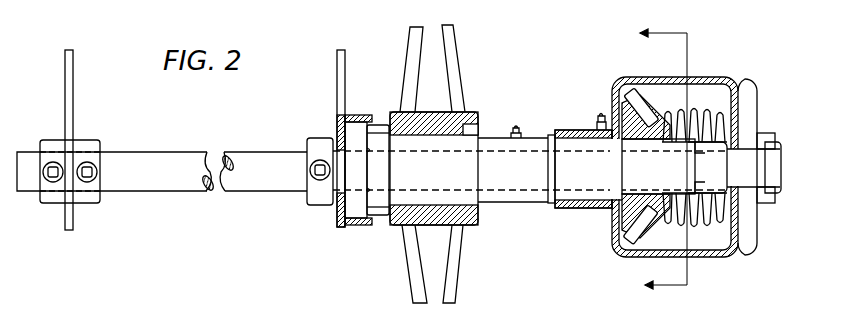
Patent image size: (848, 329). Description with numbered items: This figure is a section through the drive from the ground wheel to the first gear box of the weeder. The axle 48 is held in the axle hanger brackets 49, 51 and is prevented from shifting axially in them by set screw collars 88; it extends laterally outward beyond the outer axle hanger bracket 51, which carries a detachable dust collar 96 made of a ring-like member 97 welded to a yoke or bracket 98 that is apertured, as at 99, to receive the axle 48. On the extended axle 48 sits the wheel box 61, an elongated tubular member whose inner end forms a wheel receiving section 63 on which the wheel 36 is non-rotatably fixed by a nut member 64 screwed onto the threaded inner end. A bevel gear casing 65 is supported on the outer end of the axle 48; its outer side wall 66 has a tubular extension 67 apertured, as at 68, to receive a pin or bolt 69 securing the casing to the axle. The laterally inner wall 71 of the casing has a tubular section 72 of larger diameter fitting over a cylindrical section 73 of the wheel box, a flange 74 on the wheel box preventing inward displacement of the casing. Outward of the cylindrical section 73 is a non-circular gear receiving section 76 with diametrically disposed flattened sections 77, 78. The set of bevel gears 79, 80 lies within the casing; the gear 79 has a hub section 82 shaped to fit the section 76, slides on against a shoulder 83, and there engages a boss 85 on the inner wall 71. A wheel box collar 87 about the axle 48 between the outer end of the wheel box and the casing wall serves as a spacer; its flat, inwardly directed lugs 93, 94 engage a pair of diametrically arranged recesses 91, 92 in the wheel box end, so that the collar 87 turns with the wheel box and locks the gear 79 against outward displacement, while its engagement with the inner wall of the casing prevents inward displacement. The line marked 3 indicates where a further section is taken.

The section line 3- 3 is at (653, 158).
The left hand wheel 36 is at (459, 39).
The axle 48 is at (223, 190).
The axle hanger bracket 49 is at (70, 86).
The outer axle hanger bracket 51 is at (343, 78).
The wheel box 61 is at (530, 203).
The wheel receiving section 63 is at (462, 198).
The nut member 64 is at (383, 209).
The bevel gear casing 65 is at (705, 78).
The outer side wall 66 is at (731, 236).
The tubular extension 67 is at (773, 203).
The aperture 68 is at (772, 142).
The pin or bolt 69 is at (762, 133).
The laterally inner wall 71 is at (609, 108).
The tubular section 72 is at (567, 209).
The cylindrical section 73 is at (566, 160).
The flange 74 is at (551, 138).
The gear receiving section 76 is at (643, 218).
The flattened section 77 is at (652, 141).
The flattened section 78 is at (627, 190).
The bevel gear 79 is at (647, 96).
The bevel gear 80 is at (713, 120).
The hub section 82 is at (672, 130).
The shoulder 83 is at (627, 148).
The boss 85 is at (614, 214).
The wheel box collar 87 is at (712, 173).
The set screw collar 88 is at (84, 203).
The recess 91 is at (697, 149).
The recess 92 is at (695, 189).
The lug 93 is at (695, 126).
The lug 94 is at (702, 208).
The dust collar 96 is at (352, 228).
The ring-like member 97 is at (362, 114).
The yoke or bracket 98 is at (338, 200).
The aperture 99 is at (327, 157).